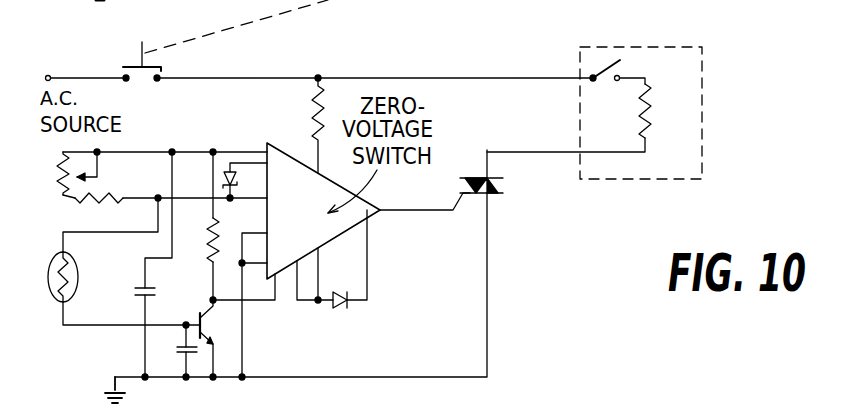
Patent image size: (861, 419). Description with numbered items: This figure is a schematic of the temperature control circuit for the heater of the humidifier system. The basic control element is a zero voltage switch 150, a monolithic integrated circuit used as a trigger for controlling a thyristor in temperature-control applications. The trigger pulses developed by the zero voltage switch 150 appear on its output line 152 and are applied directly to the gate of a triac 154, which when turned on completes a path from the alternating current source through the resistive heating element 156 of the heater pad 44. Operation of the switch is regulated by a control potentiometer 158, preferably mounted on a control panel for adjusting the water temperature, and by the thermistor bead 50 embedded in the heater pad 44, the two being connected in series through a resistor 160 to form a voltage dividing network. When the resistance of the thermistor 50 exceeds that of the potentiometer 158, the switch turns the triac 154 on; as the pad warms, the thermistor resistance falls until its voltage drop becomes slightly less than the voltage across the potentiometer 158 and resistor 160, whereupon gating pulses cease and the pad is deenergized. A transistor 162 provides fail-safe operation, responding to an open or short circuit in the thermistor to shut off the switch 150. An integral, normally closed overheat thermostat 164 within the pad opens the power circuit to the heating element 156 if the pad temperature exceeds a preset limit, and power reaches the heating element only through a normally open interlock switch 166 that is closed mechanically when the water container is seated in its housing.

The heater pad 44 is at (690, 155).
The thermistor bead 50 is at (49, 286).
The zero voltage switch 150 is at (288, 150).
The output line 152 is at (420, 213).
The triac 154 is at (503, 188).
The resistive heating element 156 is at (650, 108).
The control potentiometer 158 is at (58, 177).
The resistor 160 is at (110, 187).
The transistor 162 is at (197, 317).
The overheat thermostat 164 is at (610, 65).
The interlock switch 166 is at (163, 70).